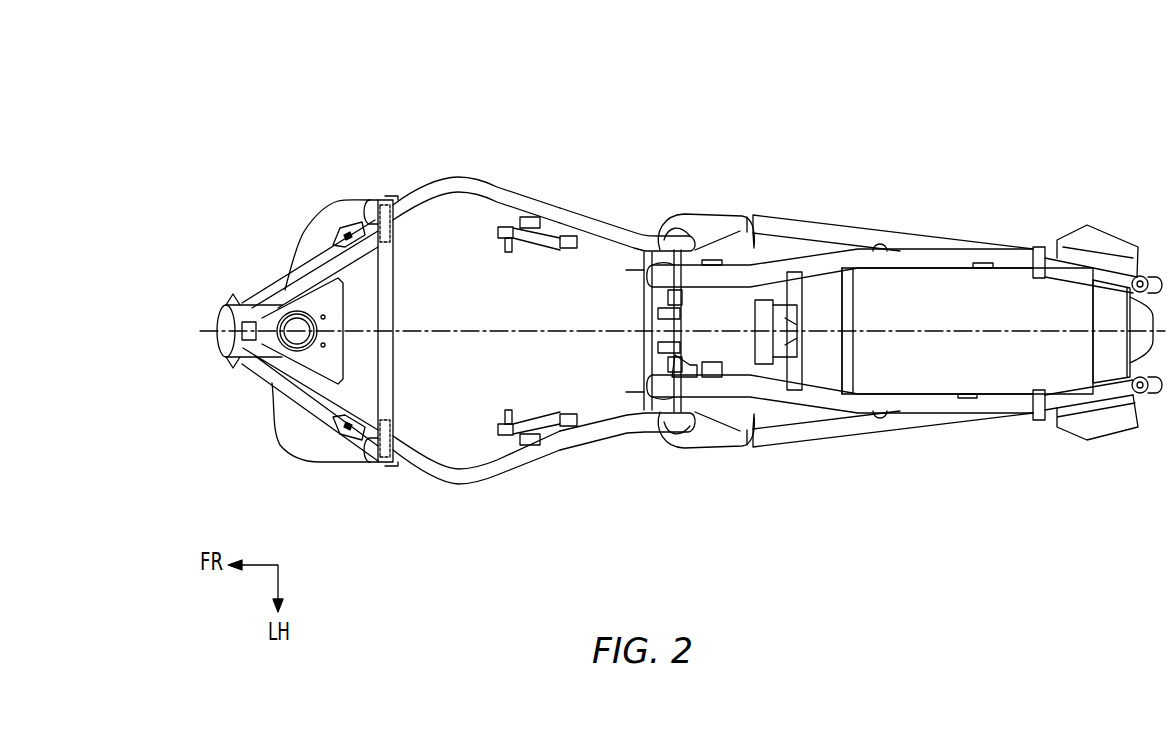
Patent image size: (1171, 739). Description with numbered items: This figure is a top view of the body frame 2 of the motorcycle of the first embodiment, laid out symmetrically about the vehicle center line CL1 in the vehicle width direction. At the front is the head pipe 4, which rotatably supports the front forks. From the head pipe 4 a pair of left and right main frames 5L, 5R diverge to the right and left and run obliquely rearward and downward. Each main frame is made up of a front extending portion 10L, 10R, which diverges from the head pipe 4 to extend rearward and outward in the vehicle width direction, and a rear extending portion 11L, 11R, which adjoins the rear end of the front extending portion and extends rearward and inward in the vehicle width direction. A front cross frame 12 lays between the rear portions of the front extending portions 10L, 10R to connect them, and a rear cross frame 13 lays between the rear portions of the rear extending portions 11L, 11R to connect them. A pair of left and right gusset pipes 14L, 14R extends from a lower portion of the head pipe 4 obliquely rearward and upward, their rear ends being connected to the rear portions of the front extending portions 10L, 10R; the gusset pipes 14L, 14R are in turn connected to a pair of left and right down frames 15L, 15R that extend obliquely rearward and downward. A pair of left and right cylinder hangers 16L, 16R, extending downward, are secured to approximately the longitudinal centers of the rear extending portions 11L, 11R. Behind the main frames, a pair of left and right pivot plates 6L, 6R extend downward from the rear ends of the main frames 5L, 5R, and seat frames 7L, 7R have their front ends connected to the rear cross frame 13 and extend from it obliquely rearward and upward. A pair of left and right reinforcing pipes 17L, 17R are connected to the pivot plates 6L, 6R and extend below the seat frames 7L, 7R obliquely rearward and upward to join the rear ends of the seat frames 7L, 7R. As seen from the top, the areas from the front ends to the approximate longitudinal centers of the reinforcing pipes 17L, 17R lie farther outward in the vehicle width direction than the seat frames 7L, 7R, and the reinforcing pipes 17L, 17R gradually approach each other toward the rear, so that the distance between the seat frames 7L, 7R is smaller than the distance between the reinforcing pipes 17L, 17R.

The body frame 2 is at (985, 90).
The head pipe 4 is at (260, 320).
The right main frame 5R is at (495, 185).
The left main frame 5L is at (481, 484).
The right pivot plate 6R is at (703, 220).
The left pivot plate 6L is at (697, 452).
The right seat frame 7R is at (820, 262).
The left seat frame 7L is at (830, 400).
The right front extending portion 10R is at (367, 223).
The left front extending portion 10L is at (372, 440).
The right rear extending portion 11R is at (580, 215).
The left rear extending portion 11L is at (558, 445).
The front cross frame 12 is at (395, 286).
The rear cross frame 13 is at (647, 296).
The right gusset pipe 14R is at (288, 290).
The left gusset pipe 14L is at (272, 398).
The right down frame 15R is at (340, 208).
The left down frame 15L is at (325, 430).
The right cylinder hanger 16R is at (548, 250).
The left cylinder hanger 16L is at (545, 422).
The right reinforcing pipe 17R is at (783, 227).
The left reinforcing pipe 17L is at (790, 440).
The center line CL1 is at (212, 326).